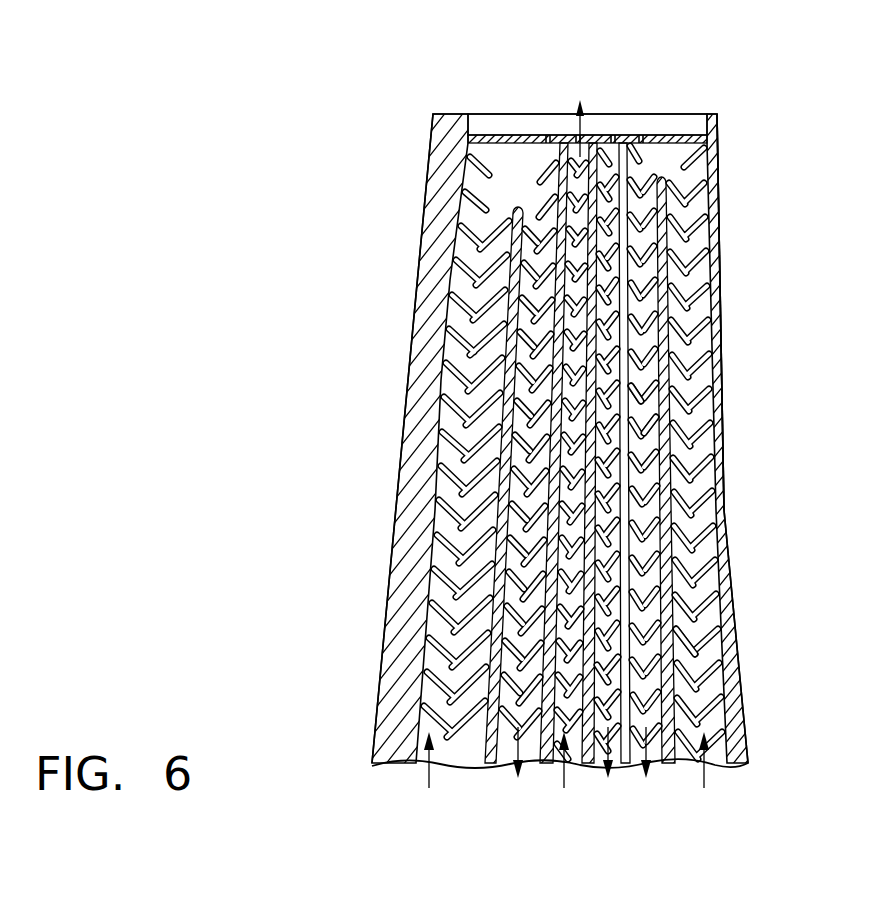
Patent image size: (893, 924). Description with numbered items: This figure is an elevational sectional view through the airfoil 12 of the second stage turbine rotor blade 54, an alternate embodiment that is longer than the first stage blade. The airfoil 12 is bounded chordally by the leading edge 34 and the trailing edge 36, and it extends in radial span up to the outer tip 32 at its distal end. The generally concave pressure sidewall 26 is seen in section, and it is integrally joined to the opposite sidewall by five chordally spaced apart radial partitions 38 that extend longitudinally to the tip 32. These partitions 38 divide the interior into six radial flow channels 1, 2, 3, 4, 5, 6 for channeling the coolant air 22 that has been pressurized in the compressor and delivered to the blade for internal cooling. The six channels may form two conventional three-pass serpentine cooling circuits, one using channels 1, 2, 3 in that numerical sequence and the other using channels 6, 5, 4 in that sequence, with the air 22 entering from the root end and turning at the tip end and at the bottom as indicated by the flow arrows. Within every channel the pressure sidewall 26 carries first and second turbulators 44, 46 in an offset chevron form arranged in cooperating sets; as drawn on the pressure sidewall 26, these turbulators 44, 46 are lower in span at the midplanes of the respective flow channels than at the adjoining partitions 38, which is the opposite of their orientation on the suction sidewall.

The turbine rotor blade 54 is at (394, 146).
The trailing edge 36 is at (408, 387).
The leading edge 34 is at (724, 302).
The airfoil 12 is at (732, 205).
The outer tip 32 is at (634, 114).
The pressure sidewall 26 is at (517, 150).
The second turbulator 46 is at (653, 645).
The flow channel 6 is at (507, 169).
The flow channel 5 is at (550, 171).
The flow channel 4 is at (570, 152).
The flow channel 3 is at (610, 153).
The flow channel 2 is at (652, 160).
The flow channel 1 is at (678, 163).
The radial partitions 38 is at (648, 440).
The first turbulator 44 is at (690, 643).
The air 22 is at (705, 790).